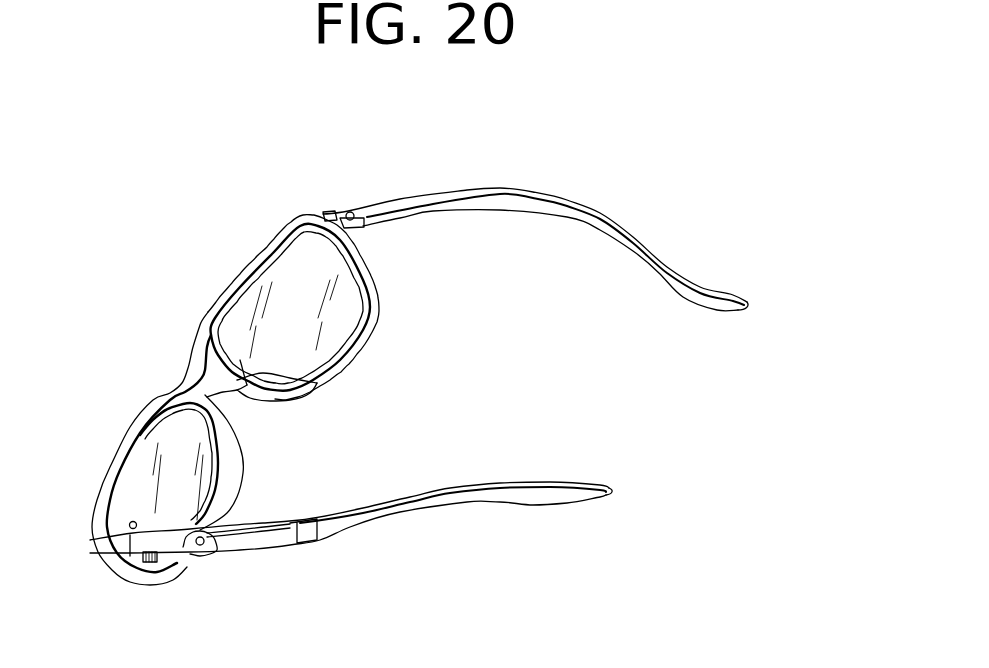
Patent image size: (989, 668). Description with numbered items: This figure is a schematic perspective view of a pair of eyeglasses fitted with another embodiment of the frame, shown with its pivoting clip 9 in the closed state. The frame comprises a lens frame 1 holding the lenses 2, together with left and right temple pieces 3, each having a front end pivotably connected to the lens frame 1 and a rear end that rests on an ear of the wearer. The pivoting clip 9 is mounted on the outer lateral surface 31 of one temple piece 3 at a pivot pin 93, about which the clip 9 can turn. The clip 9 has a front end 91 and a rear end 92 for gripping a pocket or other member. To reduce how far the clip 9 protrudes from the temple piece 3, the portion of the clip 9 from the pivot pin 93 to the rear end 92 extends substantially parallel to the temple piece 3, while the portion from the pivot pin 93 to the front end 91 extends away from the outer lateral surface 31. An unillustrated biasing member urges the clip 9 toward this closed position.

The lens frame 1 is at (230, 273).
The lens 2 is at (337, 317).
The temple piece 3 is at (520, 188).
The outer lateral surface 31 is at (475, 497).
The pivoting clip 9 is at (217, 556).
The front end 91 is at (150, 567).
The rear end 92 is at (290, 546).
The pivot pin 93 is at (228, 513).